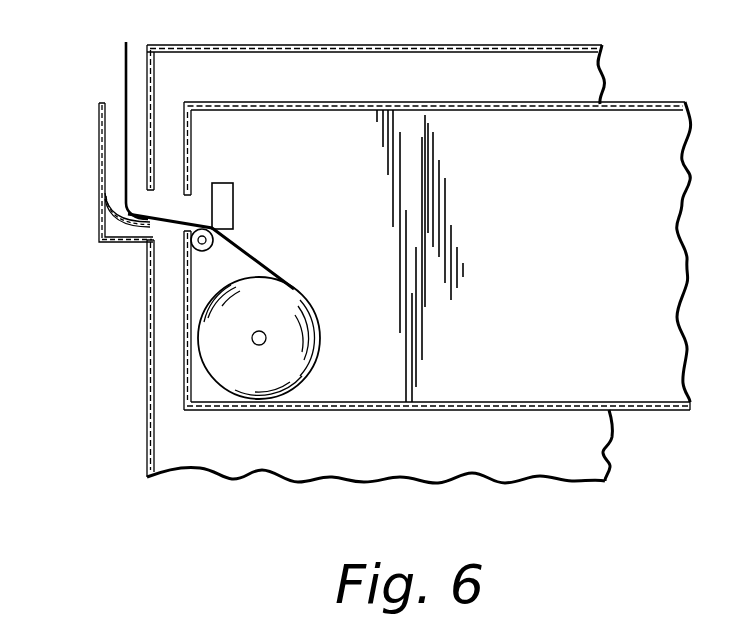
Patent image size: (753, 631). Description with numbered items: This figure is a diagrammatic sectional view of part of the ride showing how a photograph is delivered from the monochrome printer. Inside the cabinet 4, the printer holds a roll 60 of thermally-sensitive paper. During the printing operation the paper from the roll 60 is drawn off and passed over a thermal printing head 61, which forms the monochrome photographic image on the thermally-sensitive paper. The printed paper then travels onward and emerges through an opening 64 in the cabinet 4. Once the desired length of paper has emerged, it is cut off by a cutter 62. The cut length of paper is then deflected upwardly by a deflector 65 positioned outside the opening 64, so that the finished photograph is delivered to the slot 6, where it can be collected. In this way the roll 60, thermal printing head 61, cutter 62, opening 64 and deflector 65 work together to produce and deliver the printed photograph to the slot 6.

The cabinet 4 is at (219, 47).
The slot 6 is at (107, 82).
The roll of thermally-sensitive paper 60 is at (288, 343).
The thermal printing head 61 is at (233, 201).
The cutter 62 is at (184, 212).
The opening 64 is at (150, 196).
The deflector 65 is at (99, 166).